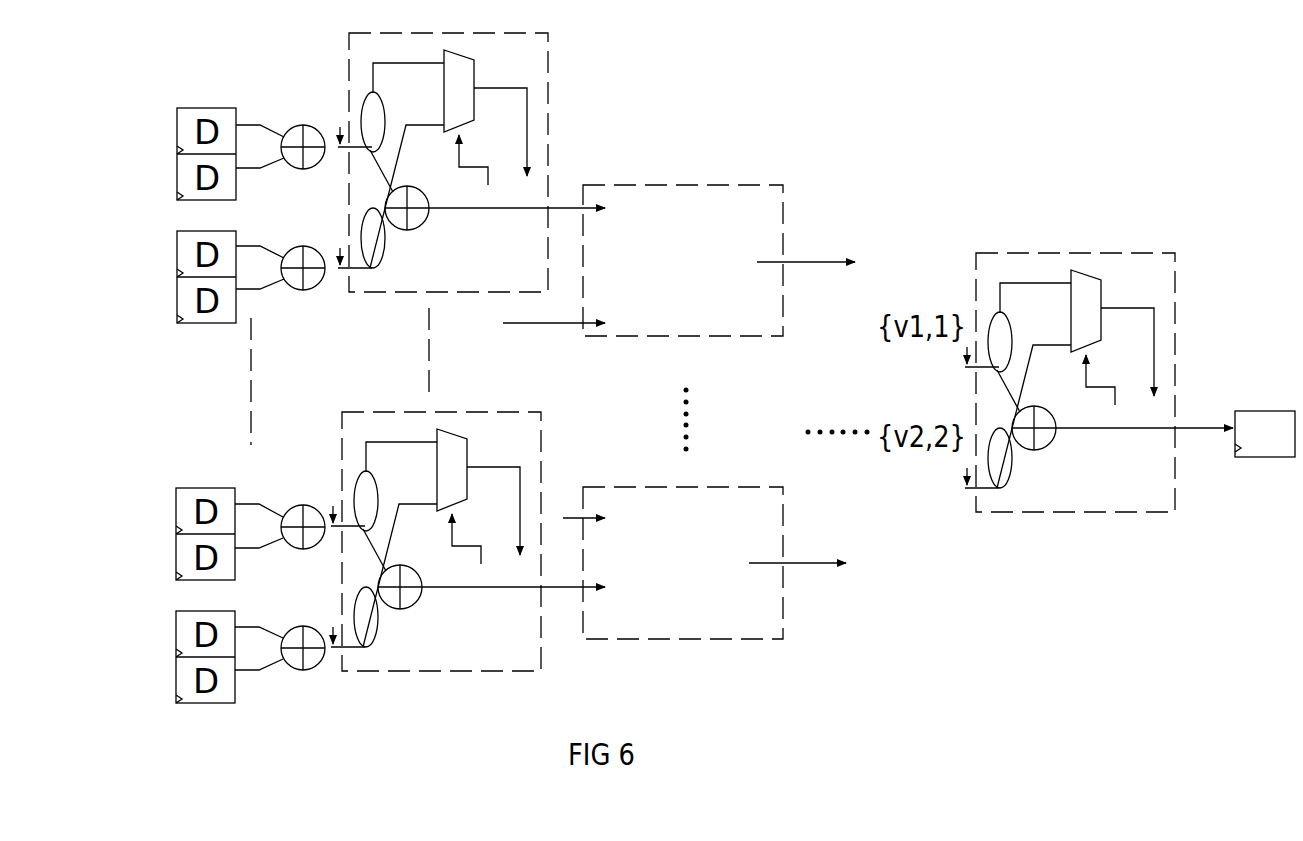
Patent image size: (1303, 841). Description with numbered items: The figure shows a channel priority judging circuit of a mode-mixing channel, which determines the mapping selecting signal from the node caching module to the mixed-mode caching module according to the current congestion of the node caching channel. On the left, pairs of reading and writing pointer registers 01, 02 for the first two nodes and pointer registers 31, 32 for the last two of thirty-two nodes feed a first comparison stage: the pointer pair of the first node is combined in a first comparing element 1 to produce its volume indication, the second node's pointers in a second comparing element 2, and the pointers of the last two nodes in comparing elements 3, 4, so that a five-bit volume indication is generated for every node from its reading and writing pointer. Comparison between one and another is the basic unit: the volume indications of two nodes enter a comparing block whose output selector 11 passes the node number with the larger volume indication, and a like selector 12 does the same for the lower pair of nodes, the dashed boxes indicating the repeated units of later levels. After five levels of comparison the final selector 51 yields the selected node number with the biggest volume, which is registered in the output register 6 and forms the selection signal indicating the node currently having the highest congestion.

The pt01 write/read pointer registers 01 is at (144, 154).
The pt02 write/read pointer registers 02 is at (144, 277).
The pt31 write/read pointer registers 31 is at (144, 534).
The pt32 write/read pointer registers 32 is at (144, 657).
The XOR gate producing {v1,1} 1 is at (288, 129).
The XOR gate producing {v2,2} 2 is at (286, 242).
The XOR gate producing {v1,31} 3 is at (285, 500).
The XOR gate producing {v2,32} 4 is at (281, 623).
The XOR gate producing {v11,x} (upper stage) 11 is at (495, 215).
The XOR gate producing {v11,x} (lower stage) 12 is at (491, 596).
The XOR gate producing {v51,sel} 51 is at (1122, 442).
The sel output register 6 is at (1251, 413).